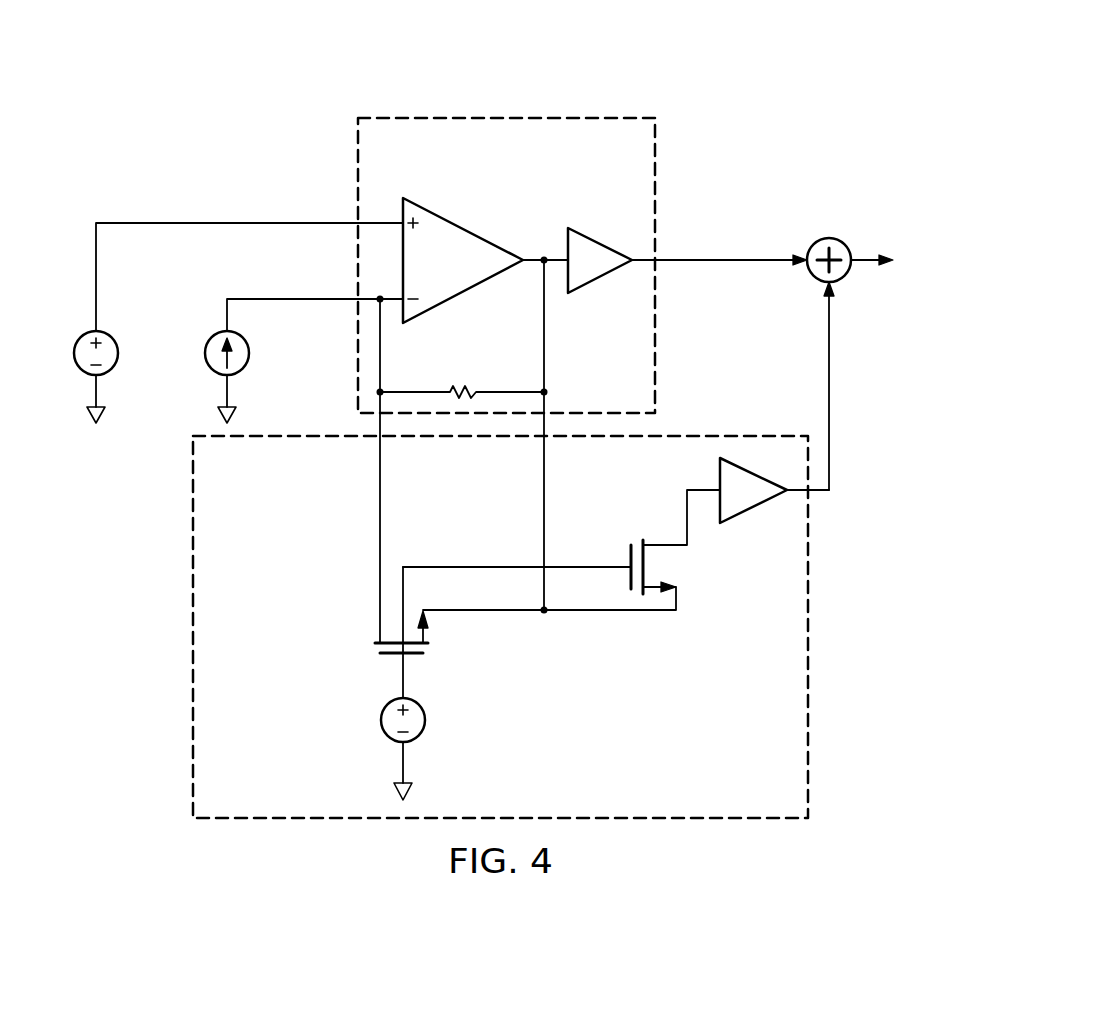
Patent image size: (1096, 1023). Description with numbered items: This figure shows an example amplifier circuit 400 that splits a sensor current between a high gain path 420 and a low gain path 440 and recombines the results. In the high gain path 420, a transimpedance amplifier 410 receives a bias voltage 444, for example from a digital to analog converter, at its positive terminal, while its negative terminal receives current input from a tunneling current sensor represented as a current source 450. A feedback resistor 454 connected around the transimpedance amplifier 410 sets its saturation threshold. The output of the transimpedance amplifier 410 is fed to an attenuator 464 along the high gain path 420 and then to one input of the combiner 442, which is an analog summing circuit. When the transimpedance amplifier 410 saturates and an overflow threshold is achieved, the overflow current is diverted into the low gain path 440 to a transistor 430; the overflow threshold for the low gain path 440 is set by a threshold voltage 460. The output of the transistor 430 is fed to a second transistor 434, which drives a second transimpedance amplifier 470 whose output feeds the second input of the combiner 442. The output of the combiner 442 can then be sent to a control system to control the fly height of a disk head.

The amplifier circuit 400 is at (722, 58).
The high gain path 420 is at (571, 112).
The low gain path 440 is at (700, 828).
The transimpedance amplifier 410 is at (462, 227).
The attenuator 464 is at (600, 242).
The feedback resistor 454 is at (465, 387).
The combiner 442 is at (840, 243).
The bias voltage 444 is at (80, 338).
The current source 450 is at (211, 338).
The transistor 434 is at (628, 556).
The transistor 430 is at (390, 657).
The threshold voltage 460 is at (425, 721).
The transimpedance amplifier 470 is at (753, 510).